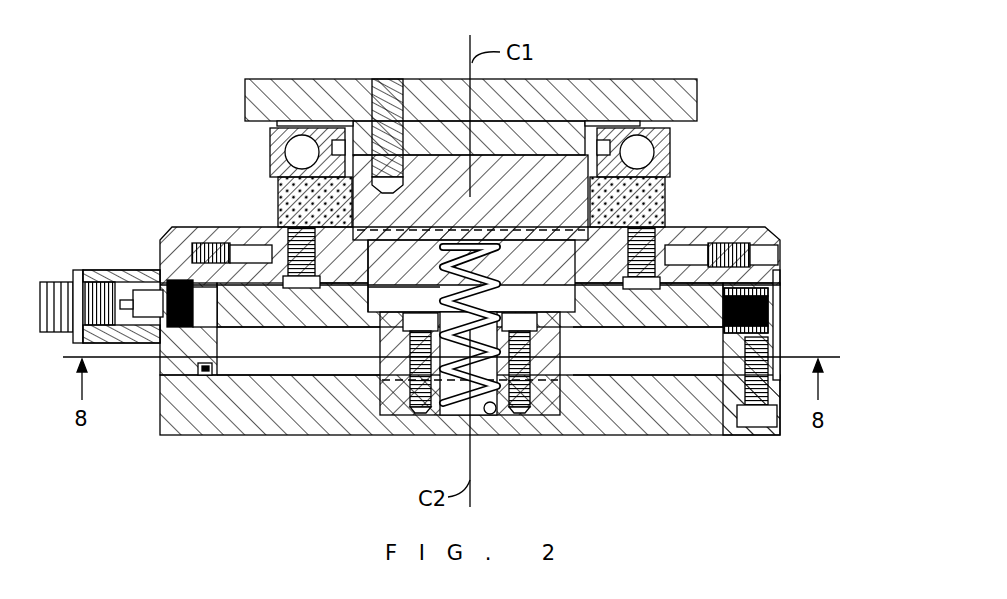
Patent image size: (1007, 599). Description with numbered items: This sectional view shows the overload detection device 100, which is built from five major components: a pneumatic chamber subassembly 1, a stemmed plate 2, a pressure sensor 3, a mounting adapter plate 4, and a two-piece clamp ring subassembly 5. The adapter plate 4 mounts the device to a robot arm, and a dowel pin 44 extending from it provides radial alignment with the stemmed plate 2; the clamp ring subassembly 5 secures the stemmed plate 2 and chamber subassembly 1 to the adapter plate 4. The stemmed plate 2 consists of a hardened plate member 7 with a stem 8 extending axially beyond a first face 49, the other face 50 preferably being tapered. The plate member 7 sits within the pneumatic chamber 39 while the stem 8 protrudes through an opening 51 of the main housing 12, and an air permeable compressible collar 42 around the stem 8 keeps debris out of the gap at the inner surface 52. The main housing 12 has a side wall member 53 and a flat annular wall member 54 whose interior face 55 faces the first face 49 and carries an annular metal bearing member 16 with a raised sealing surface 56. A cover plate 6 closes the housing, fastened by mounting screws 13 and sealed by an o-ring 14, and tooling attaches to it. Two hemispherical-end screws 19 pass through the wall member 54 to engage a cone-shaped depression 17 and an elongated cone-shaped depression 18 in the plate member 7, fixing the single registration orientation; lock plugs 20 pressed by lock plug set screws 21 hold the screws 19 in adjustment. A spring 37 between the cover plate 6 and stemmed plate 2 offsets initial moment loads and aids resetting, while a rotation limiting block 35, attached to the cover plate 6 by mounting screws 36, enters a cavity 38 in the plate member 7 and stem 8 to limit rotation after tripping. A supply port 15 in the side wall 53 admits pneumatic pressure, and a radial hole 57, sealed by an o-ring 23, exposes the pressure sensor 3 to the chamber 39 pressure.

The pneumatic chamber subassembly 1 is at (790, 345).
The stemmed plate 2 is at (461, 330).
The pressure sensor 3 is at (118, 262).
The mounting adapter plate 4 is at (292, 85).
The two-piece clamp ring subassembly 5 is at (660, 162).
The pneumatic chamber cover plate 6 is at (270, 425).
The plate member 7 is at (652, 318).
The stem 8 is at (530, 195).
The main housing 12 is at (780, 270).
The mounting screws 13 is at (757, 412).
The o-ring 14 is at (200, 372).
The input pneumatic pressure supply port 15 is at (782, 313).
The annular metal bearing member 16 is at (318, 295).
The cone-shaped depression 17 is at (610, 288).
The elongated cone-shaped depression 18 is at (338, 300).
The hemispherical-end screws 19 is at (668, 248).
The lock plugs 20 is at (675, 253).
The lock plug set screws 21 is at (752, 256).
The o-ring 23 is at (220, 322).
The rotation limiting block 35 is at (540, 413).
The mounting screws 36 is at (530, 415).
The spring 37 is at (450, 415).
The cavity 38 is at (404, 274).
The pneumatic chamber 39 is at (617, 353).
The air permeable compressible collar 42 is at (278, 203).
The dowel pin 44 is at (377, 83).
The first face 49 is at (357, 258).
The other face 50 is at (618, 320).
The opening 51 is at (278, 210).
The inner surface 52 is at (577, 273).
The side wall member 53 is at (790, 352).
The flat annular wall member 54 is at (183, 247).
The interior face 55 is at (384, 276).
The raised sealing surface 56 is at (262, 295).
The hole 57 is at (210, 303).
The overload detection device 100 is at (848, 188).